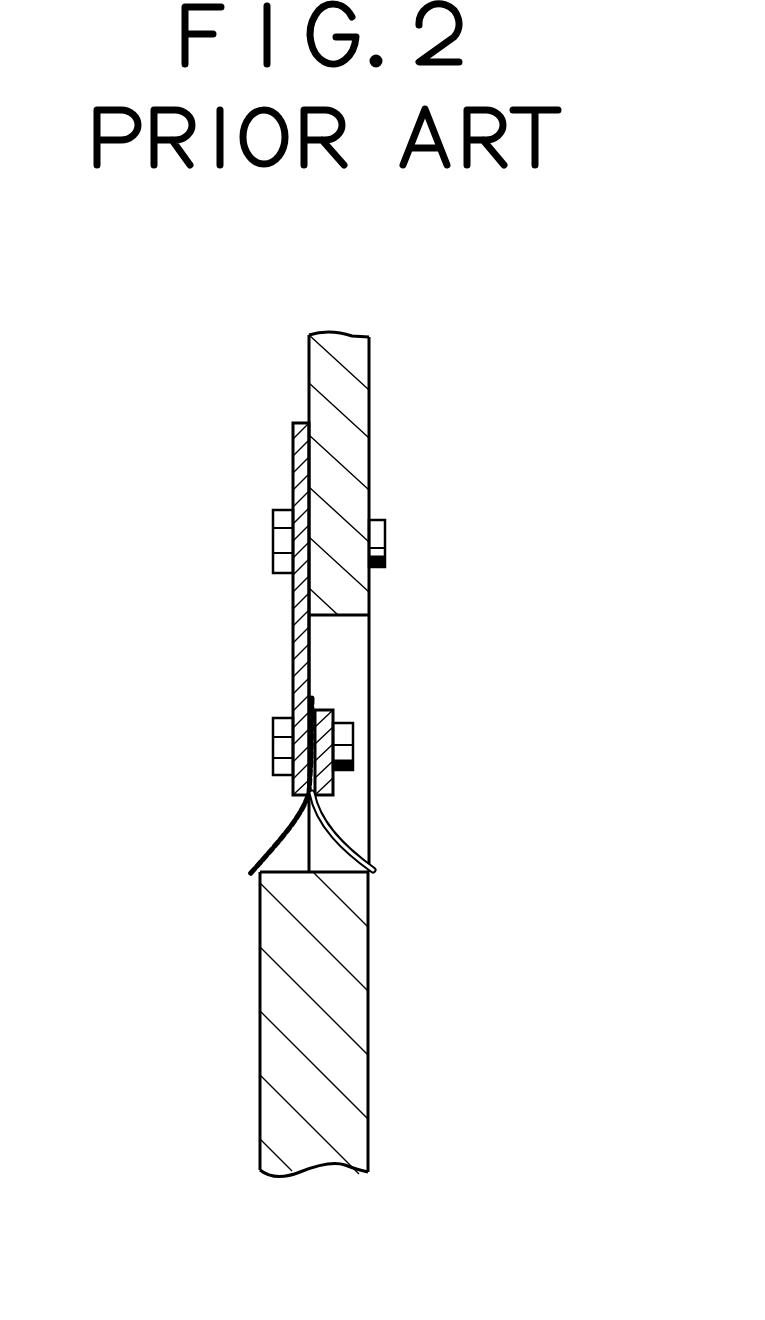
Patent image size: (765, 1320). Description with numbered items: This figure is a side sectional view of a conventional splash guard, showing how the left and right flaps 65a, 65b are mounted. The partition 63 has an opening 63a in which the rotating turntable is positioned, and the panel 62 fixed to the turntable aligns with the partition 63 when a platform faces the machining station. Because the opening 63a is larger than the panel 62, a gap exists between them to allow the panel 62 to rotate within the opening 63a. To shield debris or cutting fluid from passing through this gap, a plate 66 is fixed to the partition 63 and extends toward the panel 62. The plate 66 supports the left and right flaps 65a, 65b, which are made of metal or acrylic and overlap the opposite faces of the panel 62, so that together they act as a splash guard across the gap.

The panel 62 is at (368, 1065).
The partition 63 is at (358, 416).
The opening 63a is at (358, 657).
The left flap 65a is at (257, 860).
The right flap 65b is at (372, 864).
The plate 66 is at (292, 662).